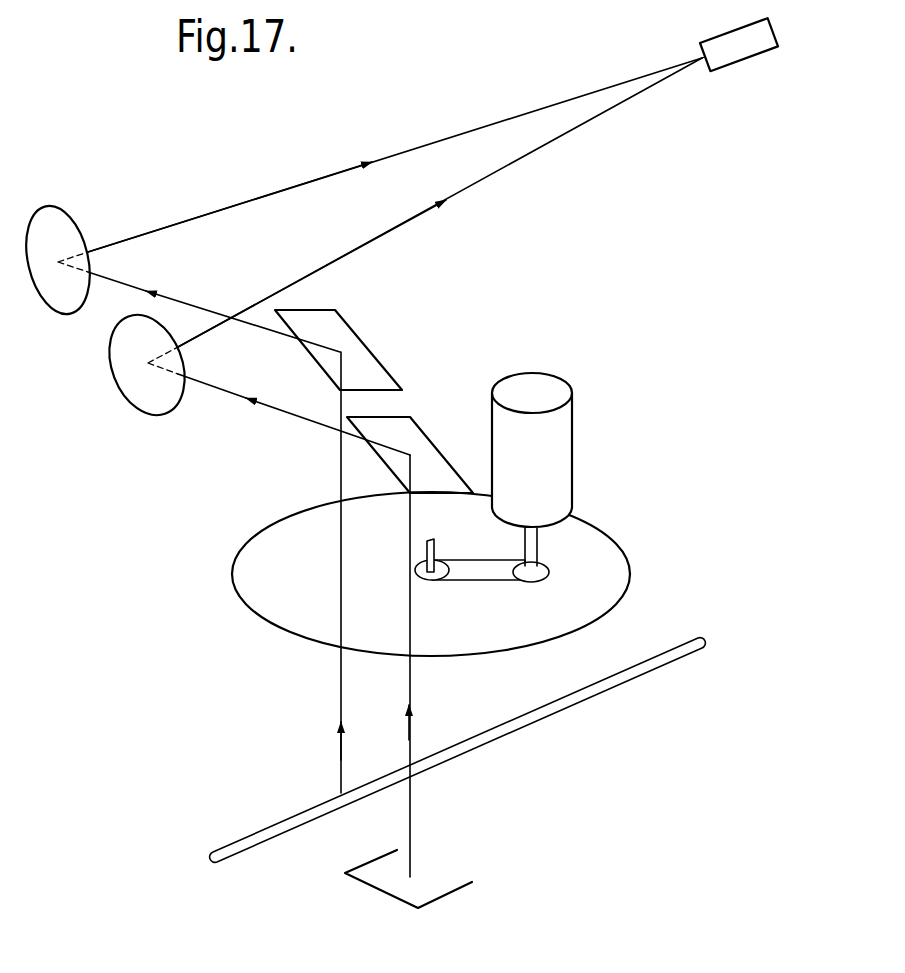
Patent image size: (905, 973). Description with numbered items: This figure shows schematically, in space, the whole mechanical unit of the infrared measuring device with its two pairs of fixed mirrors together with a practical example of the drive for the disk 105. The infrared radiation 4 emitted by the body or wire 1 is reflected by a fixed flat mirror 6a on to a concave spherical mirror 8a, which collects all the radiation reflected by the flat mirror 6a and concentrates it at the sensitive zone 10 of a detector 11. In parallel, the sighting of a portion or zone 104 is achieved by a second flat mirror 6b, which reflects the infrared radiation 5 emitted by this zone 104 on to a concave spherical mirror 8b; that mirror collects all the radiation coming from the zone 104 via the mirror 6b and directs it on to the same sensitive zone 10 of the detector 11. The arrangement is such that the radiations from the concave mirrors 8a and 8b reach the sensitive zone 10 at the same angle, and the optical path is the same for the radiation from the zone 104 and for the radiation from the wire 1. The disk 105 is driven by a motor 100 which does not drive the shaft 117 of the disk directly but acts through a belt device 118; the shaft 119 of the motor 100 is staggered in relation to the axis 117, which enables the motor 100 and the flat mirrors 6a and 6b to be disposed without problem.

The body 1 is at (640, 667).
The infrared radiation 4 is at (411, 697).
The infrared radiation 5 is at (340, 708).
The fixed flat mirror 6a is at (347, 338).
The flat mirror 6b is at (410, 433).
The concave spherical mirror 8a is at (53, 230).
The concave spherical mirror 8b is at (130, 362).
The sensitive zone 10 is at (702, 60).
The detector 11 is at (732, 53).
The motor 100 is at (553, 422).
The zone 104 is at (413, 893).
The disk 105 is at (597, 570).
The shaft of the disk 117 is at (433, 545).
The belt device 118 is at (482, 582).
The shaft of motor 119 is at (530, 550).